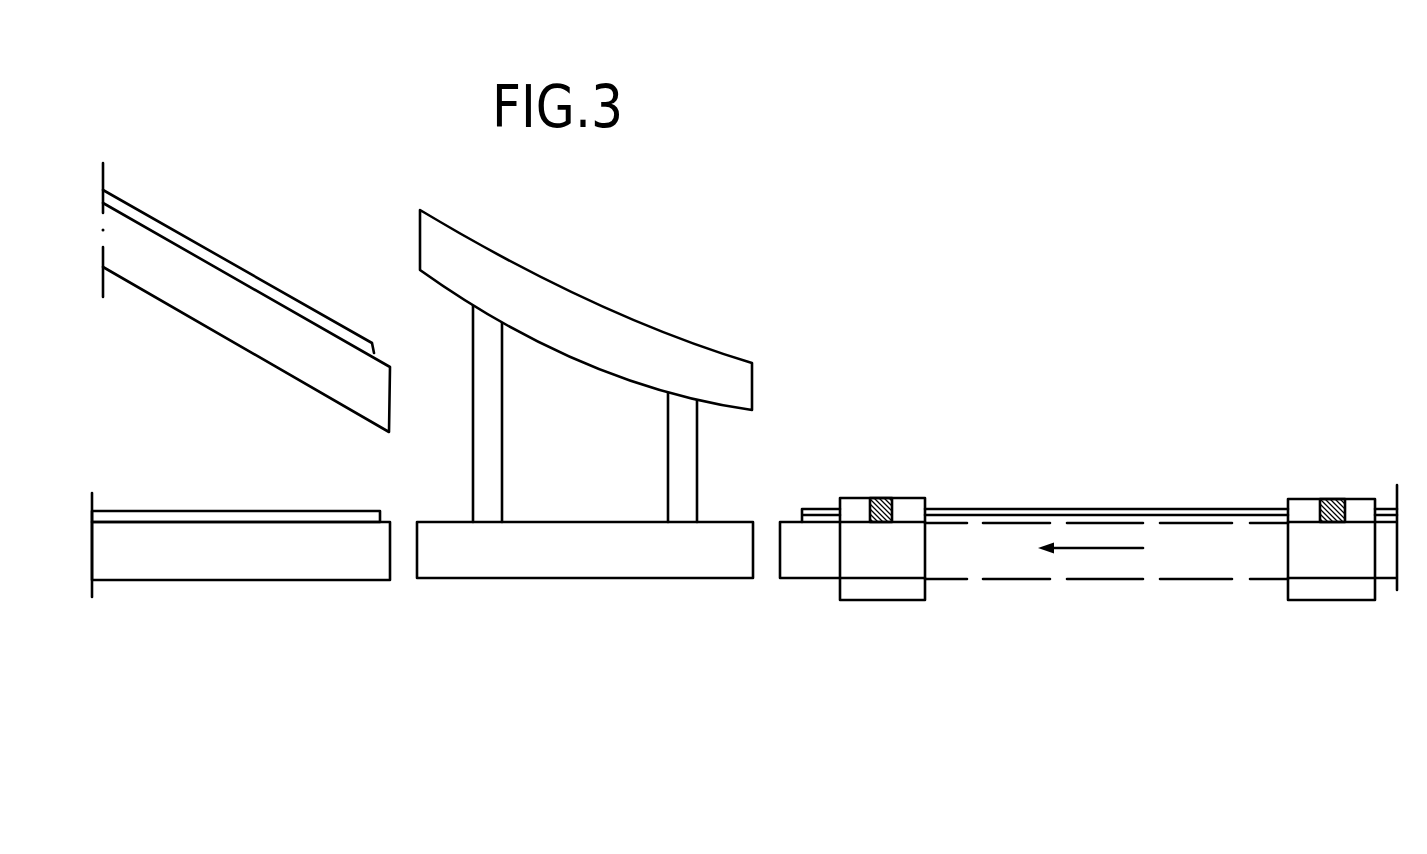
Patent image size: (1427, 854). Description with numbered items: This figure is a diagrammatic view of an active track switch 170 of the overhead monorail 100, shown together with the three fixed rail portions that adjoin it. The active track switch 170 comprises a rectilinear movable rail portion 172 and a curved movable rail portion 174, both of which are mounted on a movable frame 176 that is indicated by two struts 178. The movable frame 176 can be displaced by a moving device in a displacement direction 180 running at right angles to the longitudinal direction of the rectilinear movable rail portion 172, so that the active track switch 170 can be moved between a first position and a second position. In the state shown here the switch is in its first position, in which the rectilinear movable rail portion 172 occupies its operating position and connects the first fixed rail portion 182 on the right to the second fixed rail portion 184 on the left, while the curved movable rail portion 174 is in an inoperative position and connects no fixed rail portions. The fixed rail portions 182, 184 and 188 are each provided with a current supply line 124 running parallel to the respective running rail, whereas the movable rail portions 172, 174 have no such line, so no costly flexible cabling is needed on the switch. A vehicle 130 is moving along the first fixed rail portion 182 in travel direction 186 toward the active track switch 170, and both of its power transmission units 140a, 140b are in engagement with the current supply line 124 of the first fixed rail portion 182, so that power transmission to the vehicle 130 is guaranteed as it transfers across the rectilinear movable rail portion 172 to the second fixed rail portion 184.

The overhead monorail 100 is at (1081, 507).
The current supply line 124 is at (272, 287).
The vehicle 130 is at (1044, 611).
The power transmission unit 140a is at (882, 498).
The power transmission unit 140b is at (1335, 499).
The active track switch 170 is at (627, 438).
The rectilinear movable rail portion 172 is at (708, 562).
The curved movable rail portion 174 is at (590, 347).
The movable frame 176 is at (433, 464).
The struts 178 is at (483, 462).
The displacement direction 180 is at (580, 618).
The first fixed rail portion 182 is at (813, 558).
The second fixed rail portion 184 is at (348, 560).
The travel direction 186 is at (1107, 547).
The fixed rail portion 188 is at (227, 313).